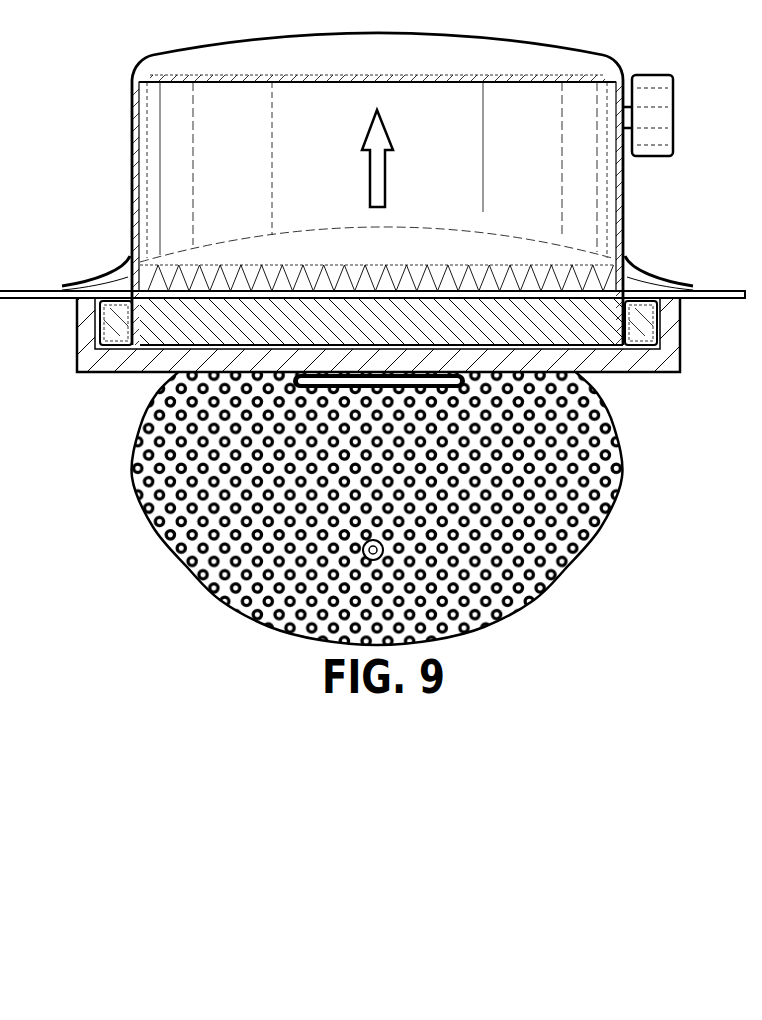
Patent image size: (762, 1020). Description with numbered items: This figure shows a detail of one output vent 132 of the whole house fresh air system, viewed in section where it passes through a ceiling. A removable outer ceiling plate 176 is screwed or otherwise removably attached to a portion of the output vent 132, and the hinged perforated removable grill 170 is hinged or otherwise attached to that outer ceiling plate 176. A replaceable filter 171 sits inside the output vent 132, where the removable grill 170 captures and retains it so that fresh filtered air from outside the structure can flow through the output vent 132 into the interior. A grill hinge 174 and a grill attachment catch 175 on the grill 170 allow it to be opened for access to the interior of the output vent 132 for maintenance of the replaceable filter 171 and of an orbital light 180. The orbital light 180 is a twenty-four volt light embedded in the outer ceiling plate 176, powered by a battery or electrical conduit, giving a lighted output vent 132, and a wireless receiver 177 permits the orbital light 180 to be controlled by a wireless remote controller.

The output vent 132 is at (134, 188).
The hinged perforated removable grill 170 is at (197, 575).
The replaceable filter 171 is at (157, 277).
The grill hinge 174 is at (395, 382).
The grill attachment catch 175 is at (380, 552).
The removable outer ceiling plate 176 is at (89, 351).
The wireless receiver 177 is at (651, 158).
The orbital light 180 is at (115, 335).